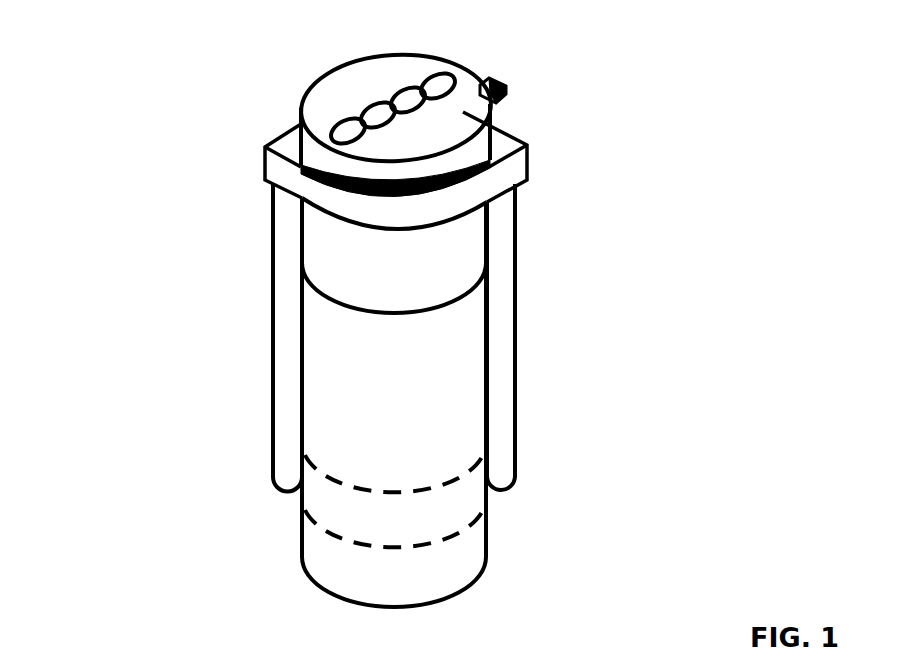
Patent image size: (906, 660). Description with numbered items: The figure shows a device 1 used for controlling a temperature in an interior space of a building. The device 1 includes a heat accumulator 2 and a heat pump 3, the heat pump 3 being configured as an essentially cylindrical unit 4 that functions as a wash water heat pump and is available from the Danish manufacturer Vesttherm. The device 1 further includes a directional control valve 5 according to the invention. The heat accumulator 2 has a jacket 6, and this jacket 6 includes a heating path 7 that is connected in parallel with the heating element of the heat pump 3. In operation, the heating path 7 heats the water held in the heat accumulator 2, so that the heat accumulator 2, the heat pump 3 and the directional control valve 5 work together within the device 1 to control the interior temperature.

The device 1 is at (207, 110).
The heat accumulator 2 is at (313, 379).
The heat pump 3 is at (313, 249).
The cylindrical unit 4 is at (587, 207).
The directional control valve 5 is at (472, 114).
The jacket 6 is at (462, 333).
The heating path 7 is at (462, 502).